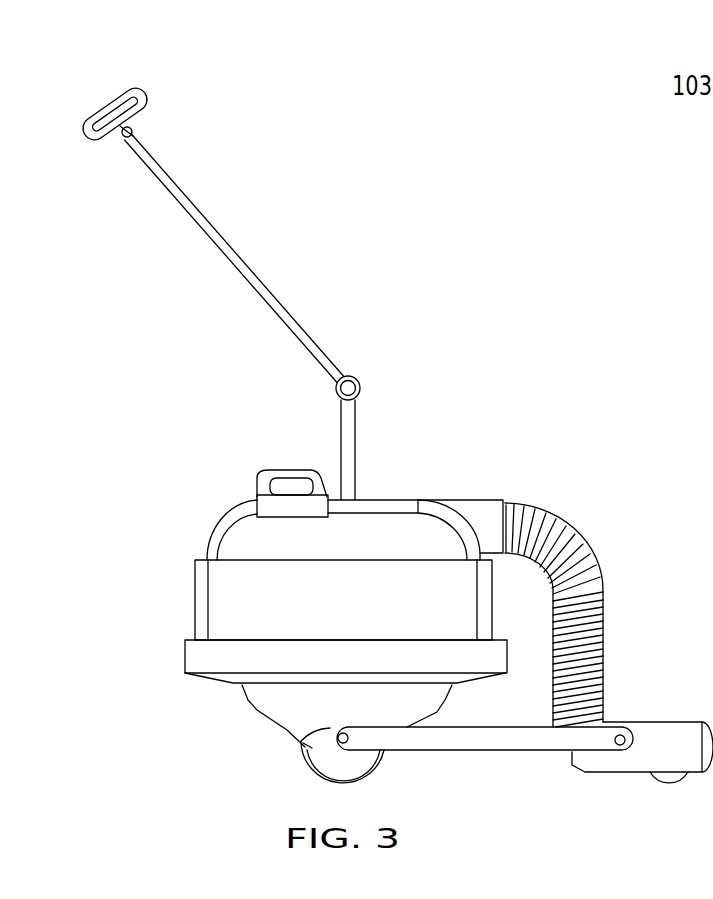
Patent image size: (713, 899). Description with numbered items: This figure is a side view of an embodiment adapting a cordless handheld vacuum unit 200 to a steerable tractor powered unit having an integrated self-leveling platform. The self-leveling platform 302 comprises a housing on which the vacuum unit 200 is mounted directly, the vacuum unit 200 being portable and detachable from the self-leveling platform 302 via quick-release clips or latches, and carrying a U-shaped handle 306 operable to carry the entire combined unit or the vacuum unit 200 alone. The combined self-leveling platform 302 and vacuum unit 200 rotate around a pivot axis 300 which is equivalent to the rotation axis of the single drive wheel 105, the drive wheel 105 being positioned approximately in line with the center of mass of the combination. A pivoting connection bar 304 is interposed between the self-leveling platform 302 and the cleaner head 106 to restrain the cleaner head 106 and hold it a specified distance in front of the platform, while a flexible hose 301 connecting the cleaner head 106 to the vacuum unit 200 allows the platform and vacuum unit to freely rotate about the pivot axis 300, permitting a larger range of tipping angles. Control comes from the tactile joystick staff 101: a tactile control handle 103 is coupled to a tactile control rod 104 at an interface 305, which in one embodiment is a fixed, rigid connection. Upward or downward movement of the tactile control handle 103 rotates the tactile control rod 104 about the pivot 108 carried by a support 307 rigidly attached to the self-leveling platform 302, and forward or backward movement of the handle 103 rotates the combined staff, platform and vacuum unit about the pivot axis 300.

The tactile joystick staff 101 is at (280, 198).
The tactile control handle 103 is at (96, 115).
The tactile control rod 104 is at (279, 298).
The single drive wheel 105 is at (380, 763).
The cleaner head 106 is at (675, 720).
The TJS pivot 108 is at (360, 389).
The handheld vacuum unit 200 is at (478, 464).
The pivot axis 300 is at (303, 743).
The flexible hose 301 is at (598, 562).
The self-leveling platform 302 is at (208, 709).
The pivoting connection bar 304 is at (482, 752).
The interface 305 is at (160, 120).
The U-shaped handle 306 is at (290, 468).
The support 307 is at (357, 448).